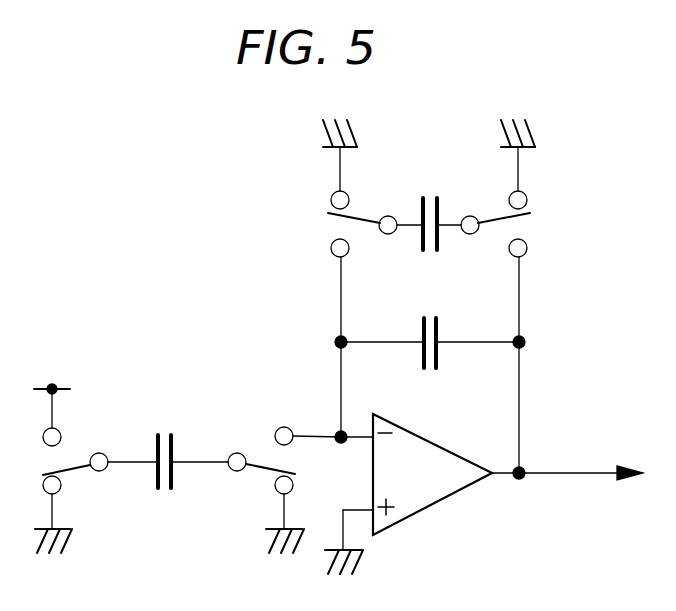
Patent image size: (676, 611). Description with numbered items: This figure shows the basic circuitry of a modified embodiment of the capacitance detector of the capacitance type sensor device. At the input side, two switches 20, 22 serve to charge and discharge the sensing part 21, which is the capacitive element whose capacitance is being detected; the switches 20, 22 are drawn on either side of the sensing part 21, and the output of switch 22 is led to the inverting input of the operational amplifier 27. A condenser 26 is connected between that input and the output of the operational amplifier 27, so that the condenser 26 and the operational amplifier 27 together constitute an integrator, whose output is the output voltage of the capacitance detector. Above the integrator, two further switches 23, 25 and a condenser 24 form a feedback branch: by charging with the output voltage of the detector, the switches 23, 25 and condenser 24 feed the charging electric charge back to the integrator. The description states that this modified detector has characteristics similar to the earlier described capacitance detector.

The switch 20 is at (72, 470).
The sensing part 21 is at (170, 456).
The switch 22 is at (248, 462).
The switch 23 is at (360, 215).
The condenser 24 is at (437, 200).
The switch 25 is at (530, 213).
The condenser 26 is at (437, 333).
The operational amplifier 27 is at (414, 478).